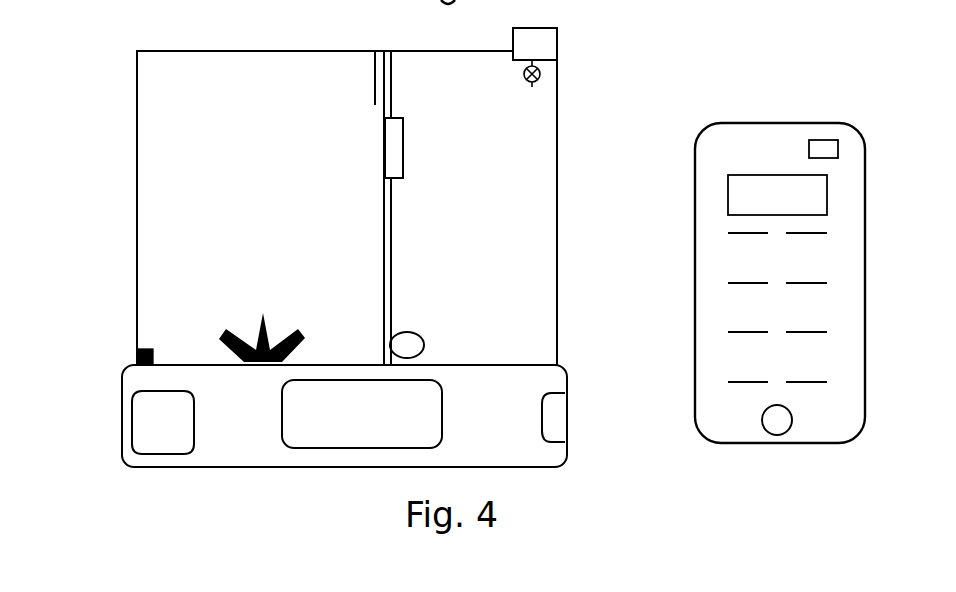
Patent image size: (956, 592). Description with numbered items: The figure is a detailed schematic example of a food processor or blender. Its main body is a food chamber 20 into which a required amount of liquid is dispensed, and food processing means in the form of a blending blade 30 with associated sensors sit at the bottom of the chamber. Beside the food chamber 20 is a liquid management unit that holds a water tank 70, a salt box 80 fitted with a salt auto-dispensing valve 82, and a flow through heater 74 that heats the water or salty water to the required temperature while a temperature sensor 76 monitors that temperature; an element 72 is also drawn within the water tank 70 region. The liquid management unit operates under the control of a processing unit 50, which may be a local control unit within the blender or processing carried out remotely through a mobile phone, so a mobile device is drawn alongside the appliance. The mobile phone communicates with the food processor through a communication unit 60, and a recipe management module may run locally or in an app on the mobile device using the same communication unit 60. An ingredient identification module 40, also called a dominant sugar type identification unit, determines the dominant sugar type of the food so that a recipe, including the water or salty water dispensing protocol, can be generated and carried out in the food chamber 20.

The food chamber 20 is at (137, 162).
The blending blade 30 is at (222, 335).
The ingredient identification module 40 is at (313, 448).
The processing unit 50 is at (459, 271).
The communication unit 60 is at (567, 425).
The water tank 70 is at (528, 269).
The sensor 72 is at (424, 339).
The flow through heater 74 is at (517, 155).
The temperature sensor 76 is at (403, 146).
The salt box 80 is at (548, 42).
The salt auto-dispensing valve 82 is at (540, 68).